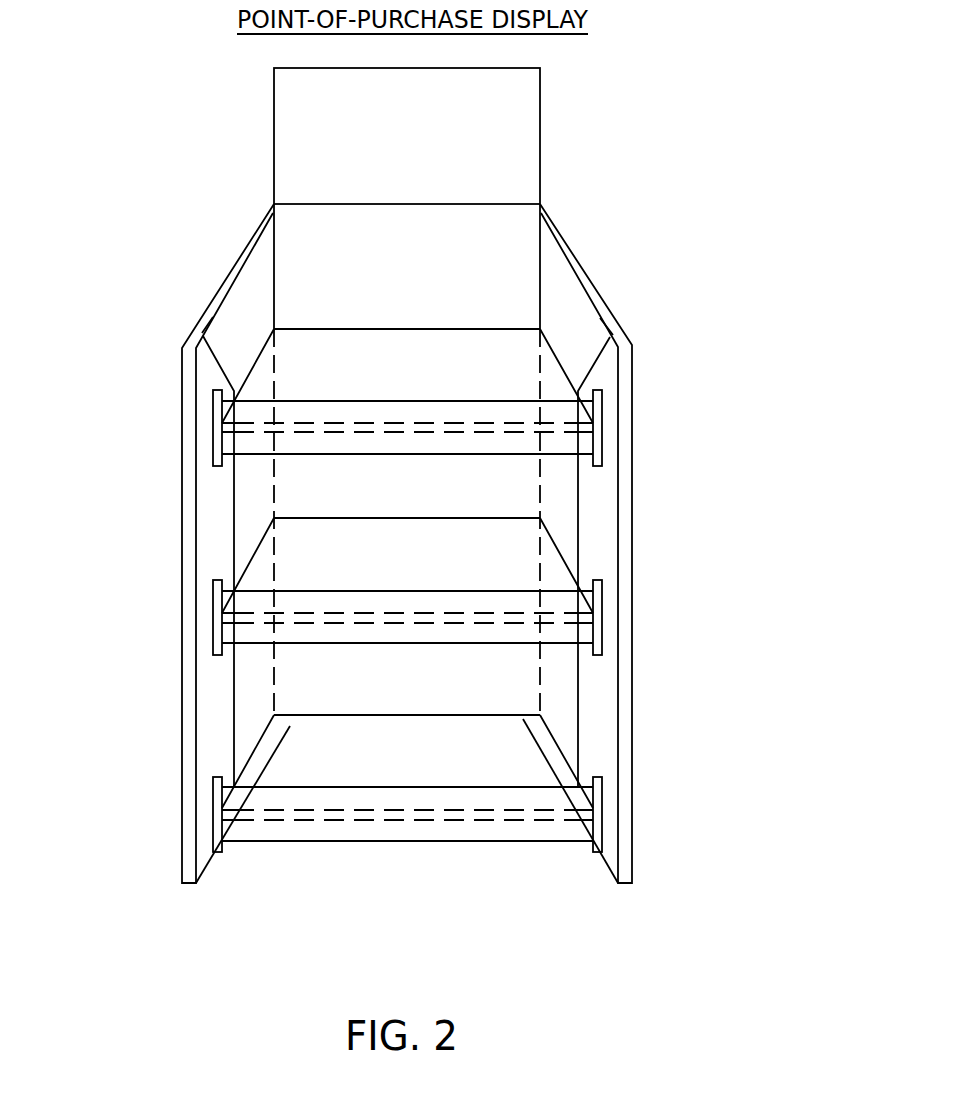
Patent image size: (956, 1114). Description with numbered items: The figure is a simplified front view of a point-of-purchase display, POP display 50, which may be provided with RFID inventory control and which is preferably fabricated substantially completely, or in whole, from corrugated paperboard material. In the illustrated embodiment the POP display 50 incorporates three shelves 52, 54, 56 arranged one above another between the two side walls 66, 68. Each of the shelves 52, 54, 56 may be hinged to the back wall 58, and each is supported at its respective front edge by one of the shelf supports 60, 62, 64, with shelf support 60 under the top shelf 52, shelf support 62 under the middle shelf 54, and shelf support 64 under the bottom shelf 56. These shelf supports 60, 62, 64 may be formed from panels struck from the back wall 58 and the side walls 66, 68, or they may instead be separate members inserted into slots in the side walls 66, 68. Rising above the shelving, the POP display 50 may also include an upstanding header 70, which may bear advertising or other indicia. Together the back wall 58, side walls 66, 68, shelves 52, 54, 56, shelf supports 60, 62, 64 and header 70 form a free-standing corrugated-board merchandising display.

The POP display 50 is at (197, 232).
The shelf 52 is at (302, 358).
The shelf 54 is at (287, 557).
The shelf 56 is at (312, 752).
The back wall 58 is at (420, 498).
The shelf support 60 is at (526, 445).
The shelf support 62 is at (555, 630).
The shelf support 64 is at (525, 820).
The side wall 66 is at (188, 682).
The side wall 68 is at (625, 613).
The header 70 is at (558, 180).